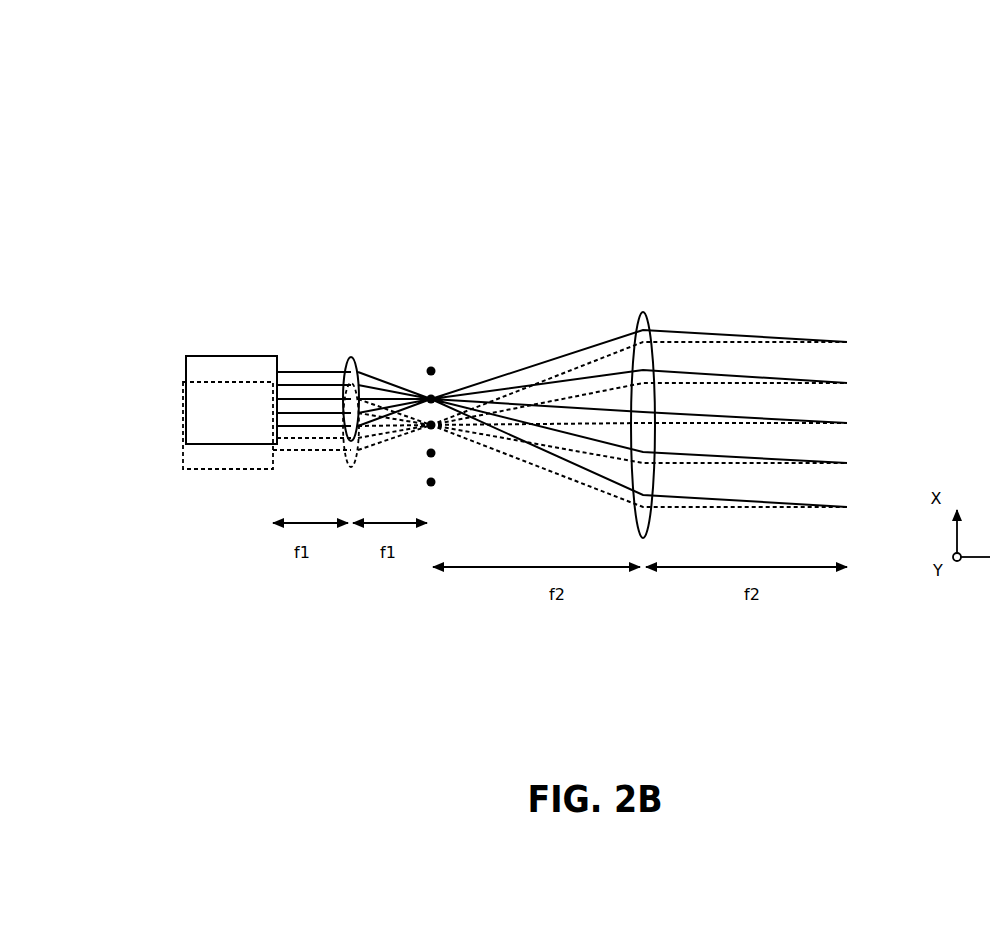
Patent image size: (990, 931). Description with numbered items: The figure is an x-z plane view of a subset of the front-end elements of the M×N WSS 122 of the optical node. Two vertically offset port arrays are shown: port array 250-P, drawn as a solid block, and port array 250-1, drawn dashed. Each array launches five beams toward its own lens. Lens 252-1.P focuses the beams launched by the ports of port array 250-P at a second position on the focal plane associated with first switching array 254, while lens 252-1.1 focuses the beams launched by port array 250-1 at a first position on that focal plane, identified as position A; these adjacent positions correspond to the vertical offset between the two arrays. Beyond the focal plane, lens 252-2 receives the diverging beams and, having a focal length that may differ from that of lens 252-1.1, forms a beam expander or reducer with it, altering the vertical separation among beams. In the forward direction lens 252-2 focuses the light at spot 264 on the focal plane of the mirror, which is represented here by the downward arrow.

The M×N WSS 122 is at (156, 47).
The port array 250-P is at (230, 353).
The port array 250-1 is at (228, 470).
The lens 252-1.P is at (350, 353).
The lens 252-1.1 is at (350, 468).
The first switching array 254 is at (432, 344).
The lens 252-2 is at (641, 307).
The spot 264 is at (847, 326).